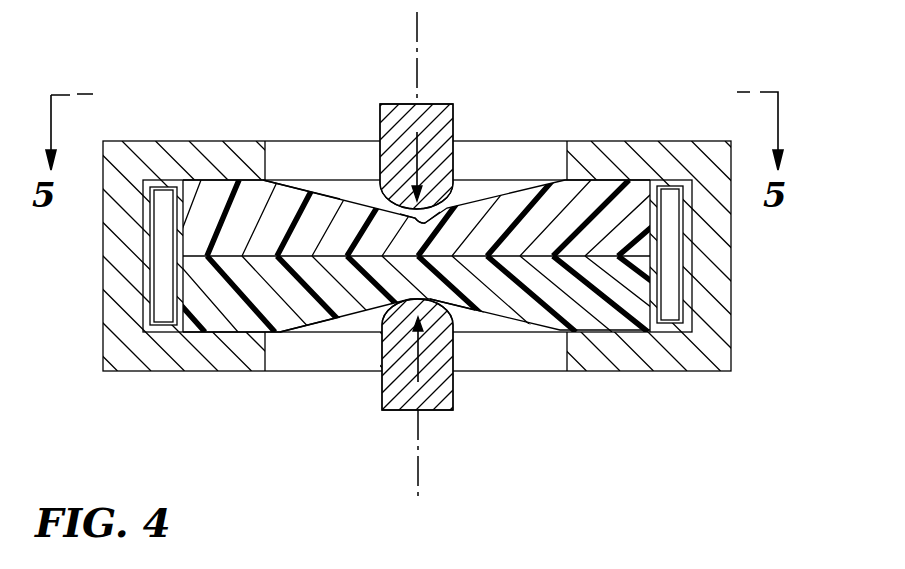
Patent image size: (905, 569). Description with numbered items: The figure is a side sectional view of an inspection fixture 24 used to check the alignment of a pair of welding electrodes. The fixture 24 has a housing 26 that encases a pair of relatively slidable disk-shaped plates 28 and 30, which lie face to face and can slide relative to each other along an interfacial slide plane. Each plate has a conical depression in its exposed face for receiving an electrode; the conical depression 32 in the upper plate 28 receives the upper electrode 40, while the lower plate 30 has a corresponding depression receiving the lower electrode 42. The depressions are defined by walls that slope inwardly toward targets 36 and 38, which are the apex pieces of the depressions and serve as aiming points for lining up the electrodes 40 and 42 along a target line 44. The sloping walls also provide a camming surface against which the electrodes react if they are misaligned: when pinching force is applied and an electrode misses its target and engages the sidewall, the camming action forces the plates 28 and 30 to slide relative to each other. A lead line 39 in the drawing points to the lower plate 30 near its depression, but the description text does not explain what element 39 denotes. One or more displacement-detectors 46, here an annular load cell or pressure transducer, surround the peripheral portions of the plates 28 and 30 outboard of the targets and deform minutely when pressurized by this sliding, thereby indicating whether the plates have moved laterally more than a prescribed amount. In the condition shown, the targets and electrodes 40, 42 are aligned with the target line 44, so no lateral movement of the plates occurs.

The inspection fixture 24 is at (452, 251).
The housing 26 is at (452, 288).
The disk-shaped plate 28 is at (439, 201).
The disk-shaped plate 30 is at (428, 317).
The conical depression 32 is at (335, 192).
The target 36 is at (413, 218).
The target 38 is at (462, 300).
The lower sheet surface 39 is at (326, 317).
The electrode 40 is at (390, 104).
The electrode 42 is at (197, 190).
The target line 44 is at (417, 50).
The displacement-detector 46 is at (672, 310).